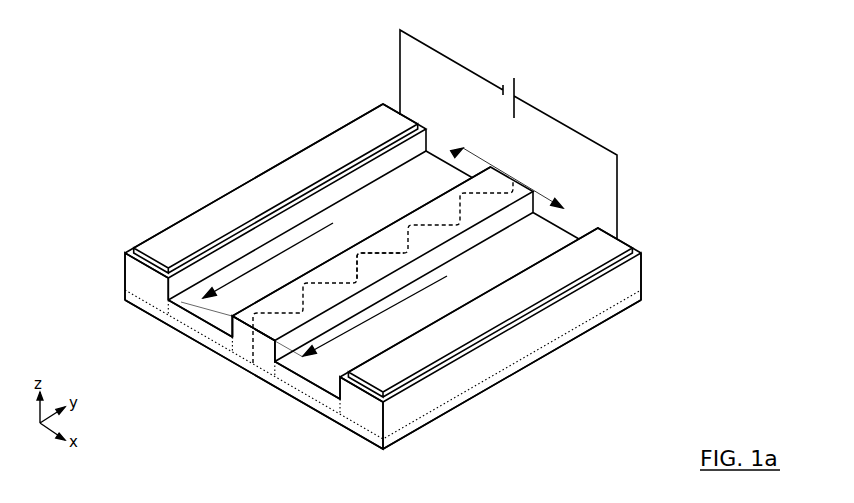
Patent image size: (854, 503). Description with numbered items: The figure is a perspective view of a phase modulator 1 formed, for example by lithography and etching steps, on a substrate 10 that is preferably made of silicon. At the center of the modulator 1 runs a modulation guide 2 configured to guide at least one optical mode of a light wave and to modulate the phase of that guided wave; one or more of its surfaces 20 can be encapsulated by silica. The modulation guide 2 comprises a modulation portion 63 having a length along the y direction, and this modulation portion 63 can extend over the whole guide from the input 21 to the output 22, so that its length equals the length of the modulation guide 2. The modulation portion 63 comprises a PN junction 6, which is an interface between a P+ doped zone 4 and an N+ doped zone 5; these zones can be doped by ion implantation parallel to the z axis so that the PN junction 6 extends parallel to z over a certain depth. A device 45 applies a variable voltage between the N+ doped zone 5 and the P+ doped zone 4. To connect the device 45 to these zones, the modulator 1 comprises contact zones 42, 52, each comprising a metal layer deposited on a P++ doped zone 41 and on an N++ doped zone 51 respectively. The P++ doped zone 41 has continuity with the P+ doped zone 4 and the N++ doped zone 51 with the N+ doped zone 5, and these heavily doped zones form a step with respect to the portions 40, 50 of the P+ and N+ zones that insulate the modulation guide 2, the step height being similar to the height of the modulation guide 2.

The modulator 1 is at (370, 96).
The modulation guide 2 is at (476, 173).
The P+ doped zone 4 is at (240, 348).
The N+ doped zone 5 is at (263, 360).
The PN junction 6 is at (487, 193).
The substrate 10 is at (295, 393).
The surfaces 20 is at (483, 208).
The input 21 is at (240, 335).
The output 22 is at (530, 182).
The portion of the P+ zone 40 is at (195, 298).
The P++ doped zone 41 is at (140, 285).
The contact zone 42 is at (403, 124).
The device 45 is at (515, 79).
The portion of the N+ zone 50 is at (327, 367).
The N++ doped zone 51 is at (360, 412).
The contact zone 52 is at (613, 250).
The modulation portion 63 is at (372, 236).